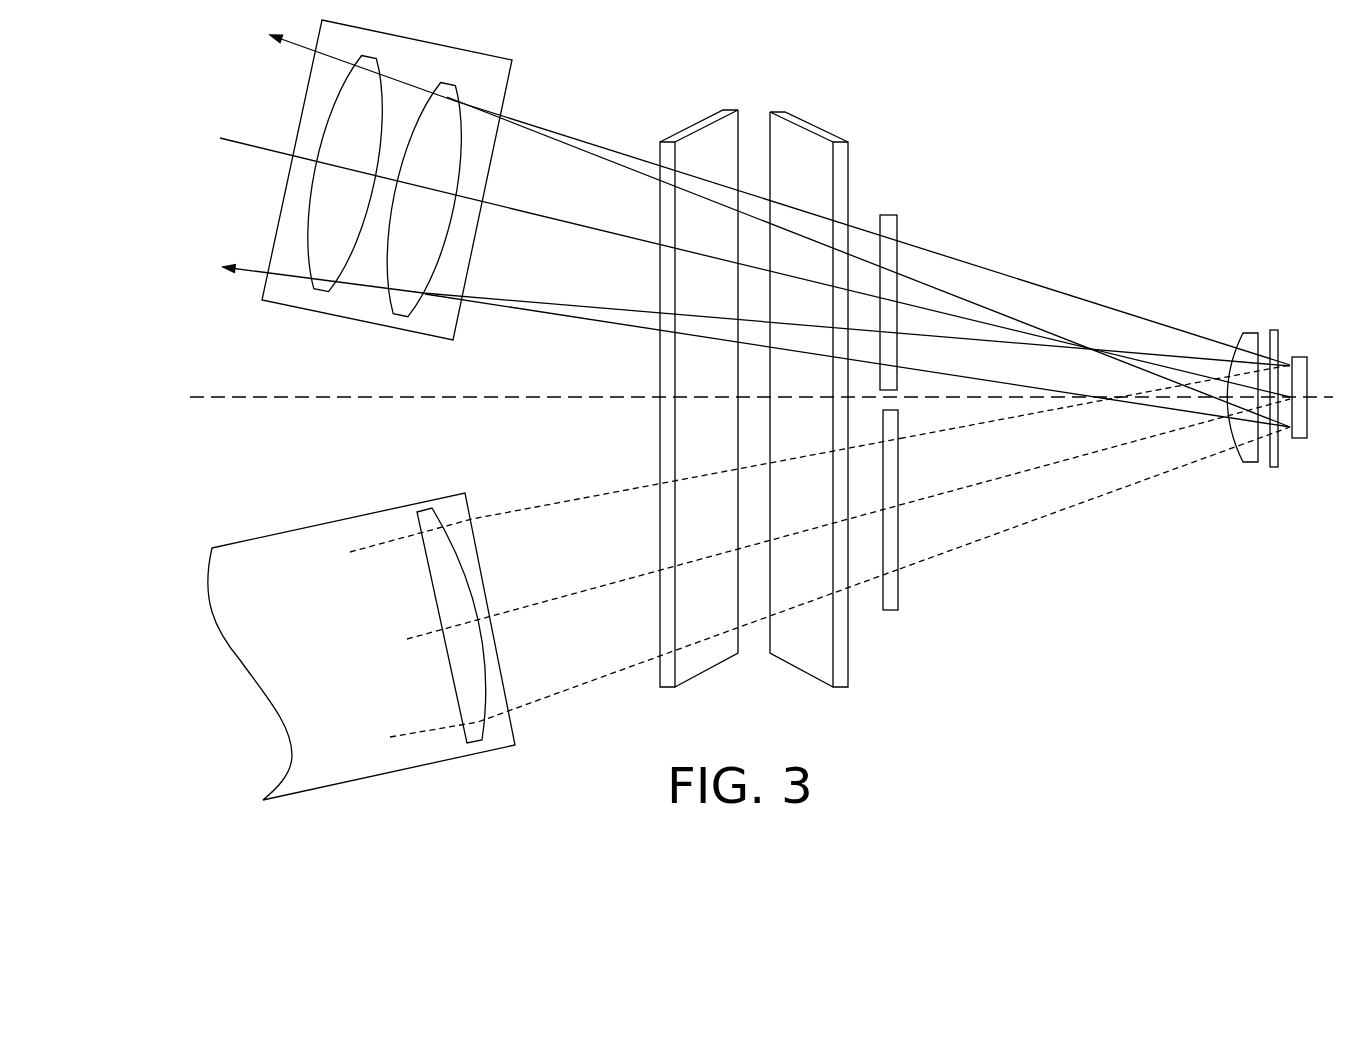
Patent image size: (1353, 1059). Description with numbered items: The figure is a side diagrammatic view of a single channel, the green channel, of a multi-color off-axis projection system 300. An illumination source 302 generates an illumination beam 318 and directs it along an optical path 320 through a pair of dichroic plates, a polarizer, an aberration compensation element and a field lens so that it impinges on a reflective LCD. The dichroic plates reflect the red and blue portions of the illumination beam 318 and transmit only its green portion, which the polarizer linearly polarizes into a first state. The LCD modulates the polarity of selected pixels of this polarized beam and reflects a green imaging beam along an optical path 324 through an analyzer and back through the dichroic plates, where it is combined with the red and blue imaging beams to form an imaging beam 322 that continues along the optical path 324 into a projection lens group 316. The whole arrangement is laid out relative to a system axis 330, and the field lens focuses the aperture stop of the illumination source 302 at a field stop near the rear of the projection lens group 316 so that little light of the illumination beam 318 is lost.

The off-axis projection system 300 is at (1108, 161).
The illumination source 302 is at (518, 737).
The projection lens group 316 is at (332, 317).
The illumination beam 318 is at (580, 497).
The optical path 320 is at (538, 602).
The imaging beam 322 is at (568, 138).
The optical path 324 is at (550, 220).
The system axis 330 is at (305, 400).